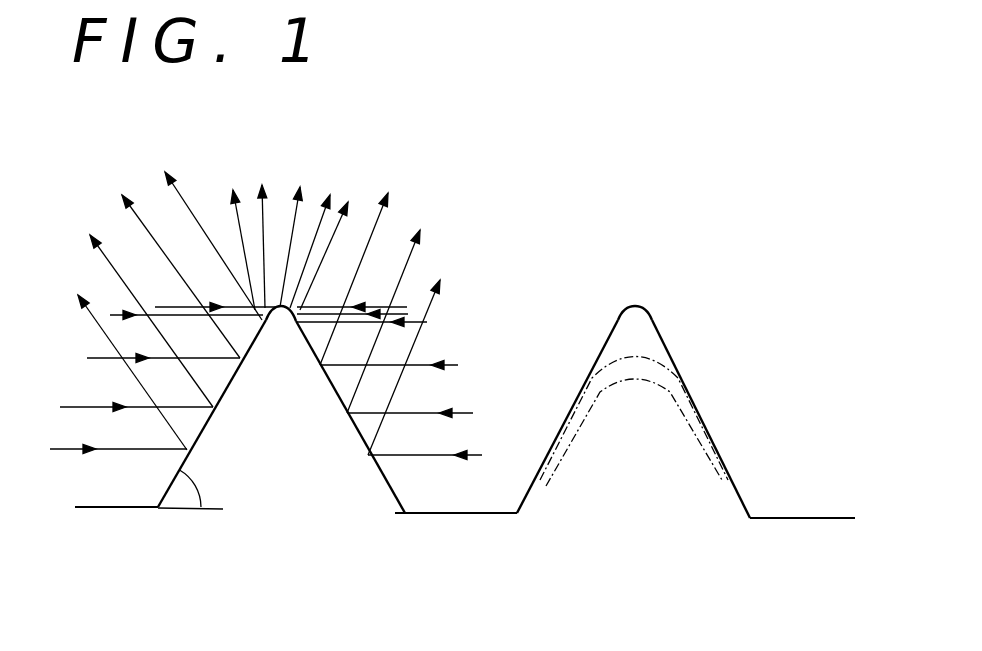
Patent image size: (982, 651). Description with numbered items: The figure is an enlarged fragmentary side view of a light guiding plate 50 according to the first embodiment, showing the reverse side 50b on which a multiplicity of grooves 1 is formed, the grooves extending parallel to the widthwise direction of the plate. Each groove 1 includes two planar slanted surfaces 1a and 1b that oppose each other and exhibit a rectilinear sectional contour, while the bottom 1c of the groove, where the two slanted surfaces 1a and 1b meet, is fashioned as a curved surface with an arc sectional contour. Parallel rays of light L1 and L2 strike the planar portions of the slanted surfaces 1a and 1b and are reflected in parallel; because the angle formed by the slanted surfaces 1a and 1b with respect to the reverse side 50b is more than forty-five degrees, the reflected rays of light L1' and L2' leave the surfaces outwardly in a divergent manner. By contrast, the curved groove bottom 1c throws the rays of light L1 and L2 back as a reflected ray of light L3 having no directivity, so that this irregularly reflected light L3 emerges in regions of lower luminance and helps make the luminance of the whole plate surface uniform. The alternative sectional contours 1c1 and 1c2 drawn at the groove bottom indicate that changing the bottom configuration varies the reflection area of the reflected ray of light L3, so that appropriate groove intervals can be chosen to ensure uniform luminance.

The groove 1 is at (469, 399).
The slanted surface 1a is at (207, 432).
The slanted surface 1b is at (352, 425).
The groove bottom 1c is at (521, 356).
The groove bottom contour 1c1 is at (655, 363).
The groove bottom contour 1c2 is at (615, 383).
The light guiding plate 50 is at (465, 434).
The reverse side 50b is at (458, 513).
The ray of light L1 is at (155, 378).
The reflected ray of light L1' is at (158, 306).
The ray of light L2 is at (404, 381).
The reflected ray of light L2' is at (404, 315).
The reflected ray of light L3 is at (322, 217).